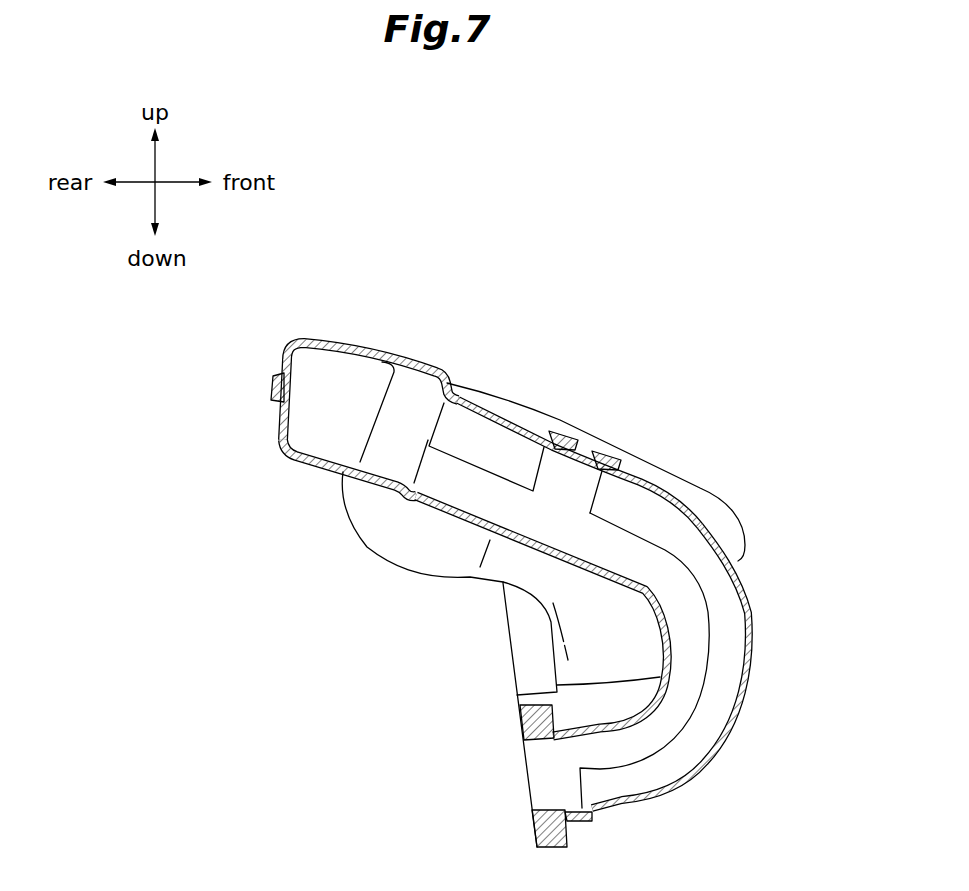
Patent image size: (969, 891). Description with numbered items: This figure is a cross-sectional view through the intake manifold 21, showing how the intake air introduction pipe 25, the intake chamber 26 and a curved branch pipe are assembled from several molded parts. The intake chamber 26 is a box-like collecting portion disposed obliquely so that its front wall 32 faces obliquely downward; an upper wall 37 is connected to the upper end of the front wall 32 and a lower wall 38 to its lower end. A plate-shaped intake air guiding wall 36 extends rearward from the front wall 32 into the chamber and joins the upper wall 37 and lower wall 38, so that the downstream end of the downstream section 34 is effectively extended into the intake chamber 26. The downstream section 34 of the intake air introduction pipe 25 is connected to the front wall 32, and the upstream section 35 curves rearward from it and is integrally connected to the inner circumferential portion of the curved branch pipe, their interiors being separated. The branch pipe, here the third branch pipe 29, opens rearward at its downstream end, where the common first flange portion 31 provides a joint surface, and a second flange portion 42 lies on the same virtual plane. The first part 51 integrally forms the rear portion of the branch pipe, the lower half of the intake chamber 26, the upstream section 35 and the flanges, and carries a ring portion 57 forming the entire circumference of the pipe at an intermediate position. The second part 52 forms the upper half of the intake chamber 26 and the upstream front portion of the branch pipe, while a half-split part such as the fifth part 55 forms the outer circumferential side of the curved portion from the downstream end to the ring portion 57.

The intake manifold 21 is at (530, 541).
The intake air introduction pipe 25 is at (676, 466).
The intake chamber 26 is at (347, 386).
The third branch pipe 29 is at (708, 684).
The first flange portion 31 is at (530, 829).
The front wall 32 is at (452, 382).
The downstream section 34 is at (516, 410).
The upstream section 35 is at (637, 660).
The intake air guiding wall 36 is at (390, 412).
The upper wall 37 is at (401, 355).
The lower wall 38 is at (371, 490).
The second flange portion 42 is at (525, 655).
The first part 51 is at (300, 484).
The second part 52 is at (357, 341).
The fifth part 55 is at (668, 804).
The ring portion 57 is at (587, 443).